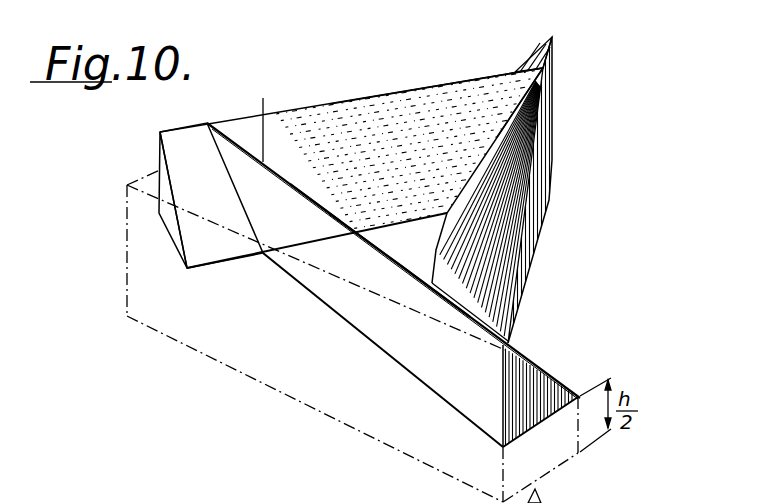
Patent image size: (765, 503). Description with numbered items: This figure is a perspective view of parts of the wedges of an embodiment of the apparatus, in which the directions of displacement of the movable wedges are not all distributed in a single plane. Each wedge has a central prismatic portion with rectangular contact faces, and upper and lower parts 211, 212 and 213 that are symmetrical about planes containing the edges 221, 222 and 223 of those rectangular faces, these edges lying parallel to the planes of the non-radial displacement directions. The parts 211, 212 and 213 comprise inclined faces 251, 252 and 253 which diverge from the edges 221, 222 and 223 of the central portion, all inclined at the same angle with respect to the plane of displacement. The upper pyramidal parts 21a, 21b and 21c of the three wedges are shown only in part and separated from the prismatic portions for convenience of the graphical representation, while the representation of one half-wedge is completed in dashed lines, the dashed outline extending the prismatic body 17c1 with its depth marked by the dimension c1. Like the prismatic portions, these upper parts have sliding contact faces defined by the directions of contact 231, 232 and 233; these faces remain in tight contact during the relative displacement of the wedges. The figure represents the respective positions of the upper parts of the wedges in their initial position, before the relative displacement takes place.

The upper pyramidal part 21a is at (258, 160).
The upper pyramidal part 21b is at (502, 66).
The upper pyramidal part 21c is at (532, 146).
The upper and lower part 211 is at (192, 142).
The upper and lower part 212 is at (328, 118).
The upper and lower part 213 is at (494, 184).
The edge 221 is at (376, 247).
The edge 222 is at (346, 226).
The edge 223 is at (435, 250).
The direction of contact 231 is at (215, 162).
The direction of contact 232 is at (497, 133).
The direction of contact 233 is at (455, 305).
The inclined face 251 is at (333, 219).
The inclined face 252 is at (409, 155).
The inclined face 253 is at (463, 245).
The bar 17c1 is at (256, 360).
The dimension c1 is at (122, 315).